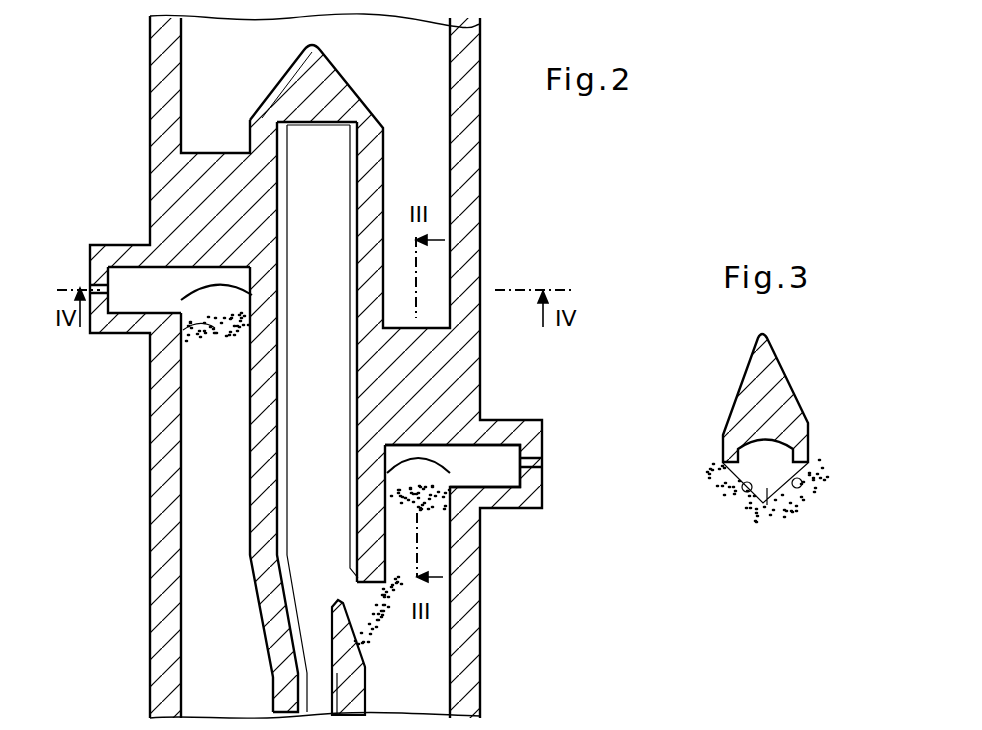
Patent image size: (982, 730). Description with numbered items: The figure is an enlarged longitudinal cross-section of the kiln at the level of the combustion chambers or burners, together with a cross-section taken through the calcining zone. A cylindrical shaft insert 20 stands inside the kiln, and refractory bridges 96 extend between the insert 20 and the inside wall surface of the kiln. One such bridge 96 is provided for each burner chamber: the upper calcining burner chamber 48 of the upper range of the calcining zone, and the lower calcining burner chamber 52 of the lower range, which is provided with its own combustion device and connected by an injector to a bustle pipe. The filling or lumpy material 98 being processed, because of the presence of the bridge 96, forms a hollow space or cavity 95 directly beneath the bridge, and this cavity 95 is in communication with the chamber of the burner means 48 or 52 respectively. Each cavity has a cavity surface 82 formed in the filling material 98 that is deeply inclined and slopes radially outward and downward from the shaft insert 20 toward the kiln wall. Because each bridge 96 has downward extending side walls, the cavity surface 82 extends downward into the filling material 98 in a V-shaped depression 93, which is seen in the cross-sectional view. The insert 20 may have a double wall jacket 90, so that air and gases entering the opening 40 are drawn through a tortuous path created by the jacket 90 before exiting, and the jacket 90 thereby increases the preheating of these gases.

In FIG. 2, the refractory bridge 96 is at (183, 202).
In FIG. 3, the refractory bridge 96 is at (752, 377).
In FIG. 2, the upper calcining burner chamber 48 is at (125, 277).
In FIG. 2, the cavity surface 82 is at (188, 338).
In FIG. 3, the cavity surface 82 is at (757, 480).
In FIG. 2, the hollow space or cavity 95 is at (233, 300).
In FIG. 2, the filling or lumpy material 98 is at (229, 391).
In FIG. 3, the filling or lumpy material 98 is at (799, 525).
In FIG. 2, the cylindrical shaft insert 20 is at (260, 465).
In FIG. 2, the opening 40 is at (355, 592).
In FIG. 2, the double wall jacket 90 is at (352, 177).
In FIG. 2, the lower calcining burner chamber 52 is at (503, 477).
In FIG. 3, the V-shaped depression 93 is at (780, 493).